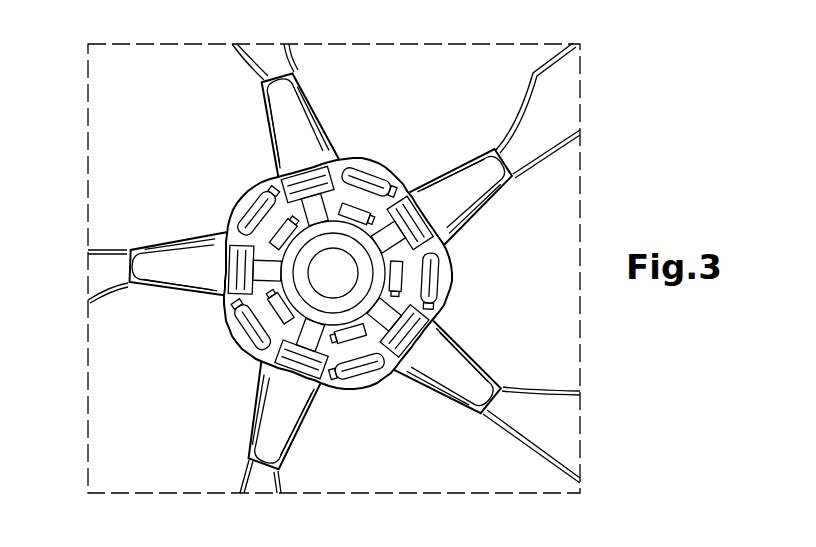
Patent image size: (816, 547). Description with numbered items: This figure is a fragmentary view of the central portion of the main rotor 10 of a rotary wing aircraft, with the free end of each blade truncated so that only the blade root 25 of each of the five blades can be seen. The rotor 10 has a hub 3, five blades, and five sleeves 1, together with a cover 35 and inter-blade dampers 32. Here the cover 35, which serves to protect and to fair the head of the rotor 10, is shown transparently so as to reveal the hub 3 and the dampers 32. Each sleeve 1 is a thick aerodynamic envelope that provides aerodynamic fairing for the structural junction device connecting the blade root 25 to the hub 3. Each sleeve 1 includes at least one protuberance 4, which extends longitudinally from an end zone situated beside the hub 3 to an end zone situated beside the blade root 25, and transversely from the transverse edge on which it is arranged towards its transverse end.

The sleeve 1 is at (300, 117).
The hub 3 is at (344, 222).
The protuberance 4 is at (268, 146).
The main rotor 10 is at (114, 396).
The blade root 25 is at (262, 58).
The inter-blade damper 32 is at (380, 192).
The cover 35 is at (441, 294).